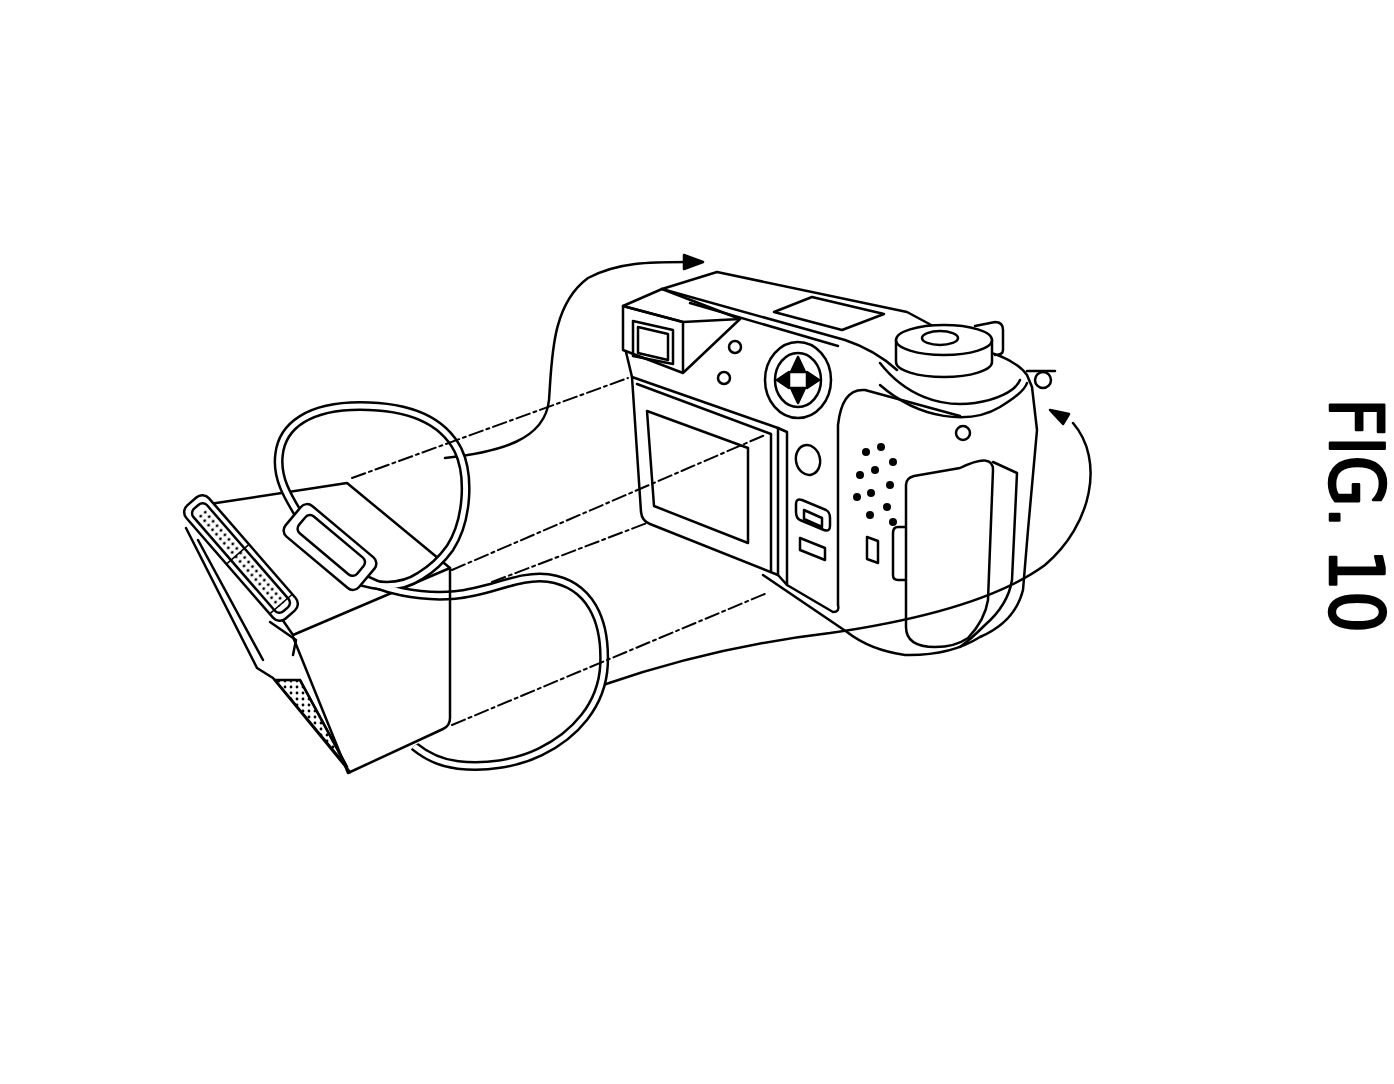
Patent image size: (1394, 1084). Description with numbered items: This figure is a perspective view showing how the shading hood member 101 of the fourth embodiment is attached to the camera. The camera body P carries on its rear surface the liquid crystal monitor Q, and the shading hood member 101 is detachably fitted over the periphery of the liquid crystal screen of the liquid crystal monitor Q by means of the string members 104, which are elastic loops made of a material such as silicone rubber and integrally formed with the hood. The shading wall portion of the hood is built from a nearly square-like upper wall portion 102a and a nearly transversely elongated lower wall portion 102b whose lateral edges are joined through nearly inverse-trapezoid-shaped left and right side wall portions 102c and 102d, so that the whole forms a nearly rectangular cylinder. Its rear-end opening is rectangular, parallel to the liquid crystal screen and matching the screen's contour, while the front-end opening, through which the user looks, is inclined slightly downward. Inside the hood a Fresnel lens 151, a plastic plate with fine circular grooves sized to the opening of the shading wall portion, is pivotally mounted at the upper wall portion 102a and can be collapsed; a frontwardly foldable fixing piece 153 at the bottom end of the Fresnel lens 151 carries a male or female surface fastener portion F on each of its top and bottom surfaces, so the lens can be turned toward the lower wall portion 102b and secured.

The shading hood member 101 is at (147, 511).
The upper wall portion 102a is at (258, 522).
The lower wall portion 102b is at (295, 680).
The left side wall portion 102c is at (268, 646).
The right side wall portion 102d is at (370, 738).
The string member 104 is at (396, 371).
The Fresnel lens 151 is at (205, 550).
The fixing piece 153 is at (200, 517).
The surface fastener portion F is at (222, 602).
The camera body P is at (773, 295).
The liquid crystal monitor Q is at (663, 446).